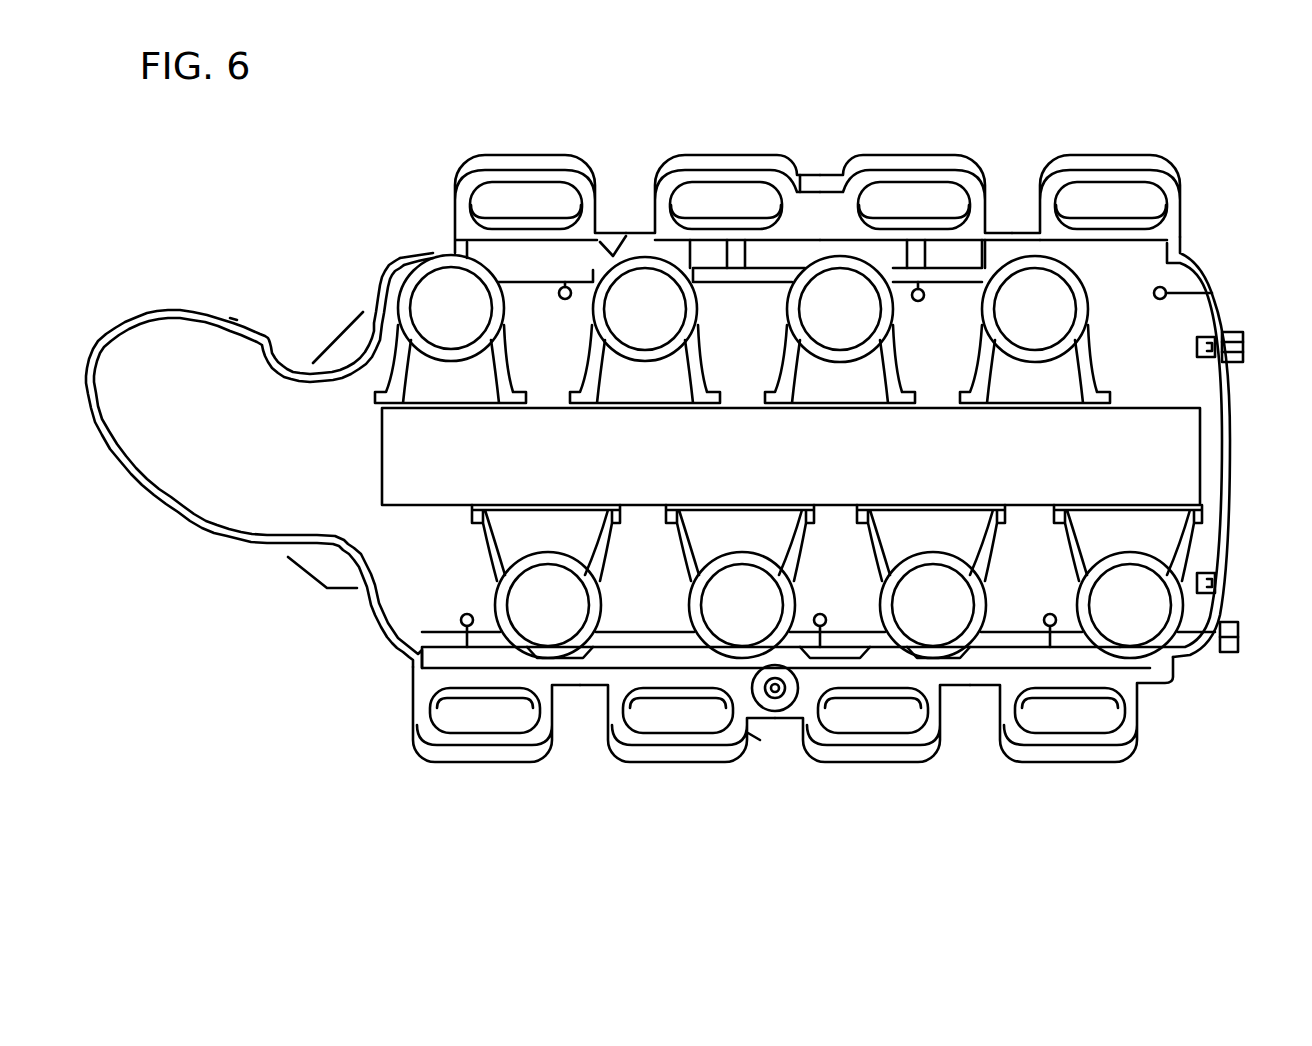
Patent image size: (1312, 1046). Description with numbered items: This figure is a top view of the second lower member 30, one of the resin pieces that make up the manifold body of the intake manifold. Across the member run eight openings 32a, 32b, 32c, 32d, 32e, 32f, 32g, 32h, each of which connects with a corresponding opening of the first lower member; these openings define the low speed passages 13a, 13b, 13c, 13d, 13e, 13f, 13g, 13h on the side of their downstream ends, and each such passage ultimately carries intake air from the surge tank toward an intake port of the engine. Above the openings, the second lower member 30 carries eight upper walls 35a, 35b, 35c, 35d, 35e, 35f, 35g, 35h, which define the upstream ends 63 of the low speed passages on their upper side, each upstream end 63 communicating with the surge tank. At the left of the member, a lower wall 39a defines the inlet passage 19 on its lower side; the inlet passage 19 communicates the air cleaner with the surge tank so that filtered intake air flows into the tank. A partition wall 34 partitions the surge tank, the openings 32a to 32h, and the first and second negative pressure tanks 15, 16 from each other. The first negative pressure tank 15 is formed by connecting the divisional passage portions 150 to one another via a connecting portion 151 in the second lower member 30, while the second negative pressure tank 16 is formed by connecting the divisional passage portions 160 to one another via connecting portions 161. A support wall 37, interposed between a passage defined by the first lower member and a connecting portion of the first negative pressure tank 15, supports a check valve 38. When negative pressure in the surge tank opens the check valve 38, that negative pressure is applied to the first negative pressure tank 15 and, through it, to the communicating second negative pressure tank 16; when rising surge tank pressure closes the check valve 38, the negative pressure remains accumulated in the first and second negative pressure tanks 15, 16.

The low speed passage 13a is at (490, 712).
The low speed passage 13b is at (628, 712).
The low speed passage 13c is at (905, 712).
The low speed passage 13d is at (1090, 712).
The low speed passage 13e is at (528, 205).
The low speed passage 13f is at (742, 208).
The low speed passage 13g is at (928, 208).
The low speed passage 13h is at (1125, 208).
The first negative pressure tank 15 is at (593, 662).
The second negative pressure tank 16 is at (613, 250).
The inlet passage 19 is at (223, 495).
The second lower member 30 is at (1180, 160).
The opening 32a is at (482, 725).
The opening 32b is at (670, 725).
The opening 32c is at (903, 725).
The opening 32d is at (1090, 725).
The opening 32e is at (516, 193).
The opening 32f is at (732, 193).
The opening 32g is at (906, 193).
The opening 32h is at (1109, 193).
The partition wall 34 is at (1215, 265).
The upper wall 35a is at (440, 410).
The upper wall 35b is at (630, 410).
The upper wall 35c is at (825, 410).
The upper wall 35d is at (1020, 410).
The upper wall 35e is at (535, 505).
The upper wall 35f is at (730, 505).
The upper wall 35g is at (925, 505).
The upper wall 35h is at (1115, 505).
The support wall 37 is at (752, 733).
The check valve 38 is at (778, 714).
The lower wall 39a is at (213, 340).
The upstream end 63 is at (430, 332).
The divisional passage portion 150 is at (690, 660).
The connecting portion 151 is at (818, 658).
The divisional passage portion 160 is at (695, 253).
The connecting portion 161 is at (738, 268).